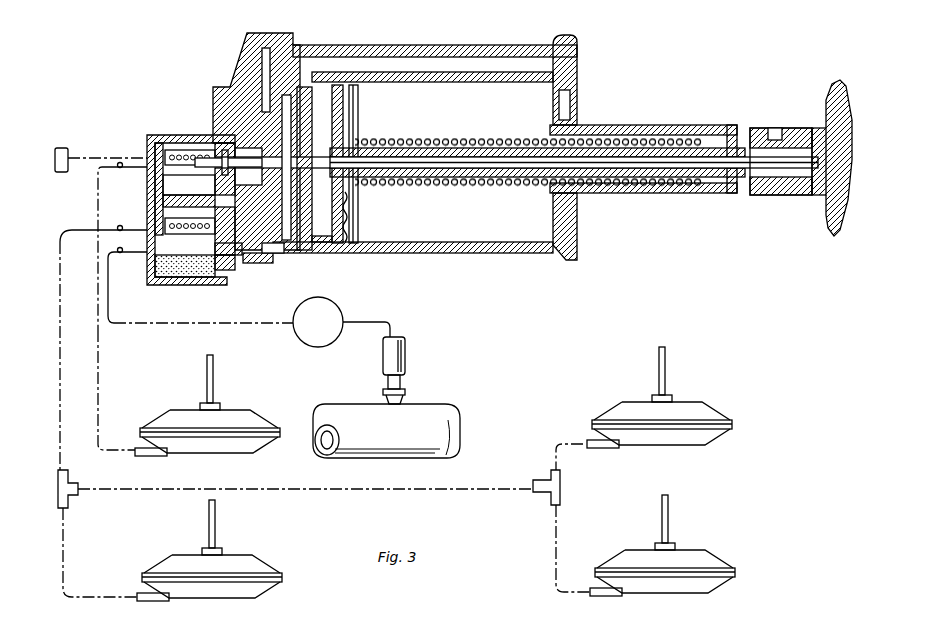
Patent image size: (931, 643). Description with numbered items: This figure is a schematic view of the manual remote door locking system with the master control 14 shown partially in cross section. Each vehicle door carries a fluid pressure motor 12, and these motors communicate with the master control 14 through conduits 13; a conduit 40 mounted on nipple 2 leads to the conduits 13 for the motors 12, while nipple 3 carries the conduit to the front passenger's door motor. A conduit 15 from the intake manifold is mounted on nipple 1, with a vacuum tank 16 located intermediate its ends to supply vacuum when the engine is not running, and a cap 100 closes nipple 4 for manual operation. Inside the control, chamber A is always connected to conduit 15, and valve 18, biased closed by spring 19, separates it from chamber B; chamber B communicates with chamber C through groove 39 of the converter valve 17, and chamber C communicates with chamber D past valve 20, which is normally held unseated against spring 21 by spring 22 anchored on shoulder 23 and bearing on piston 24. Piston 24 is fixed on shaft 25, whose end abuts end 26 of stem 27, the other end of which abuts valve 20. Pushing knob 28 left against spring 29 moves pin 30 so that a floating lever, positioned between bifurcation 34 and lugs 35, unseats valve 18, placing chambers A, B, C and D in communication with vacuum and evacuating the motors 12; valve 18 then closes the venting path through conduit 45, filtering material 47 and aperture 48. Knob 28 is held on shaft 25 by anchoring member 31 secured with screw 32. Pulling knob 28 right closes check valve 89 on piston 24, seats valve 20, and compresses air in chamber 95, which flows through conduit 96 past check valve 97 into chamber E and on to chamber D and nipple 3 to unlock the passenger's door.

The nipple 1 is at (117, 256).
The nipple 2 is at (88, 256).
The nipple 3 is at (120, 160).
The nipple 4 is at (96, 185).
The fluid pressure motor 12 is at (248, 453).
The conduit 13 is at (100, 440).
The master control 14 is at (478, 42).
The conduit 15 is at (374, 348).
The vacuum tank 16 is at (305, 338).
The converter valve 17 is at (150, 137).
The valve 18 is at (250, 265).
The spring 19 is at (232, 272).
The valve 20 is at (215, 155).
The spring 21 is at (190, 150).
The spring 22 is at (425, 140).
The shoulder 23 is at (672, 133).
The piston 24 is at (358, 140).
The shaft 25 is at (412, 140).
The end of stem 26 is at (334, 140).
The stem 27 is at (287, 150).
The knob 28 is at (838, 236).
The spring 29 is at (815, 135).
The pin 30 is at (741, 150).
The anchoring member 31 is at (762, 128).
The screw 32 is at (775, 128).
The bifurcation 34 is at (290, 185).
The lugs 35 is at (320, 252).
The groove 39 is at (155, 195).
The conduit 40 is at (63, 345).
The conduit 45 is at (205, 228).
The filtering material 47 is at (190, 282).
The aperture 48 is at (225, 280).
The check valve 89 is at (352, 222).
The chamber 95 is at (485, 108).
The conduit 96 is at (440, 48).
The check valve 97 is at (258, 56).
The cap 100 is at (65, 150).
The chamber A is at (276, 265).
The chamber B is at (165, 202).
The chamber C is at (165, 185).
The chamber D is at (240, 147).
The chamber E is at (250, 90).